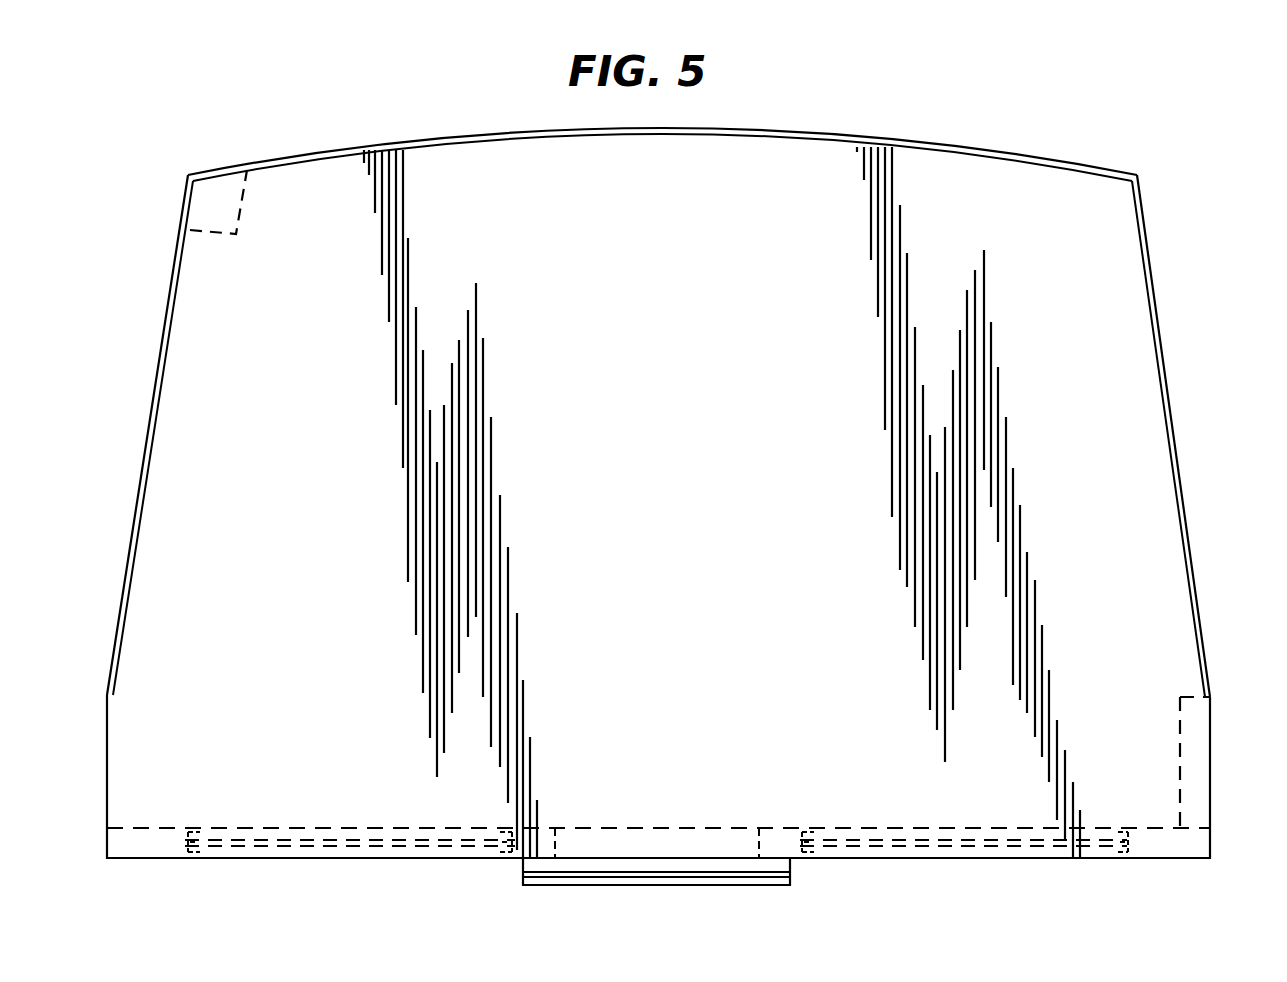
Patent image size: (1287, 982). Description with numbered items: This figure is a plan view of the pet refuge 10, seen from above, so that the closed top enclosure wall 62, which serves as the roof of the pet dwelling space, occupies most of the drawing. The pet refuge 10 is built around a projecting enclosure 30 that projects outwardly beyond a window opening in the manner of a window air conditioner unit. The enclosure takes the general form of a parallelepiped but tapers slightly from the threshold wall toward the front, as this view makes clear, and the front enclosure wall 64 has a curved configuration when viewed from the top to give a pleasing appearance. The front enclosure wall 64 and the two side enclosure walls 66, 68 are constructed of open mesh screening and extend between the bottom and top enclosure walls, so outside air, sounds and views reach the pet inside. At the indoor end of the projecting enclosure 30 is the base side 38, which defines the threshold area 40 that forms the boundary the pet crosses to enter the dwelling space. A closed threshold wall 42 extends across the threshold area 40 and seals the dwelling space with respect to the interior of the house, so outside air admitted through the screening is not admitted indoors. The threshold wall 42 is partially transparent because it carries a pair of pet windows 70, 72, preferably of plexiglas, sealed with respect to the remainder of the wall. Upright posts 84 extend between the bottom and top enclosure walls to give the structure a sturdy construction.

The pet refuge 10 is at (1213, 584).
The projecting enclosure 30 is at (1158, 307).
The base side 38 is at (165, 862).
The threshold area 40 is at (1143, 860).
The closed threshold wall 42 is at (800, 858).
The closed top enclosure wall 62 is at (638, 420).
The front enclosure wall 64 is at (851, 133).
The side enclosure wall 66 is at (1170, 382).
The side enclosure wall 68 is at (149, 426).
The pet window 70 is at (953, 828).
The pet window 72 is at (335, 828).
The upright post 84 is at (200, 207).